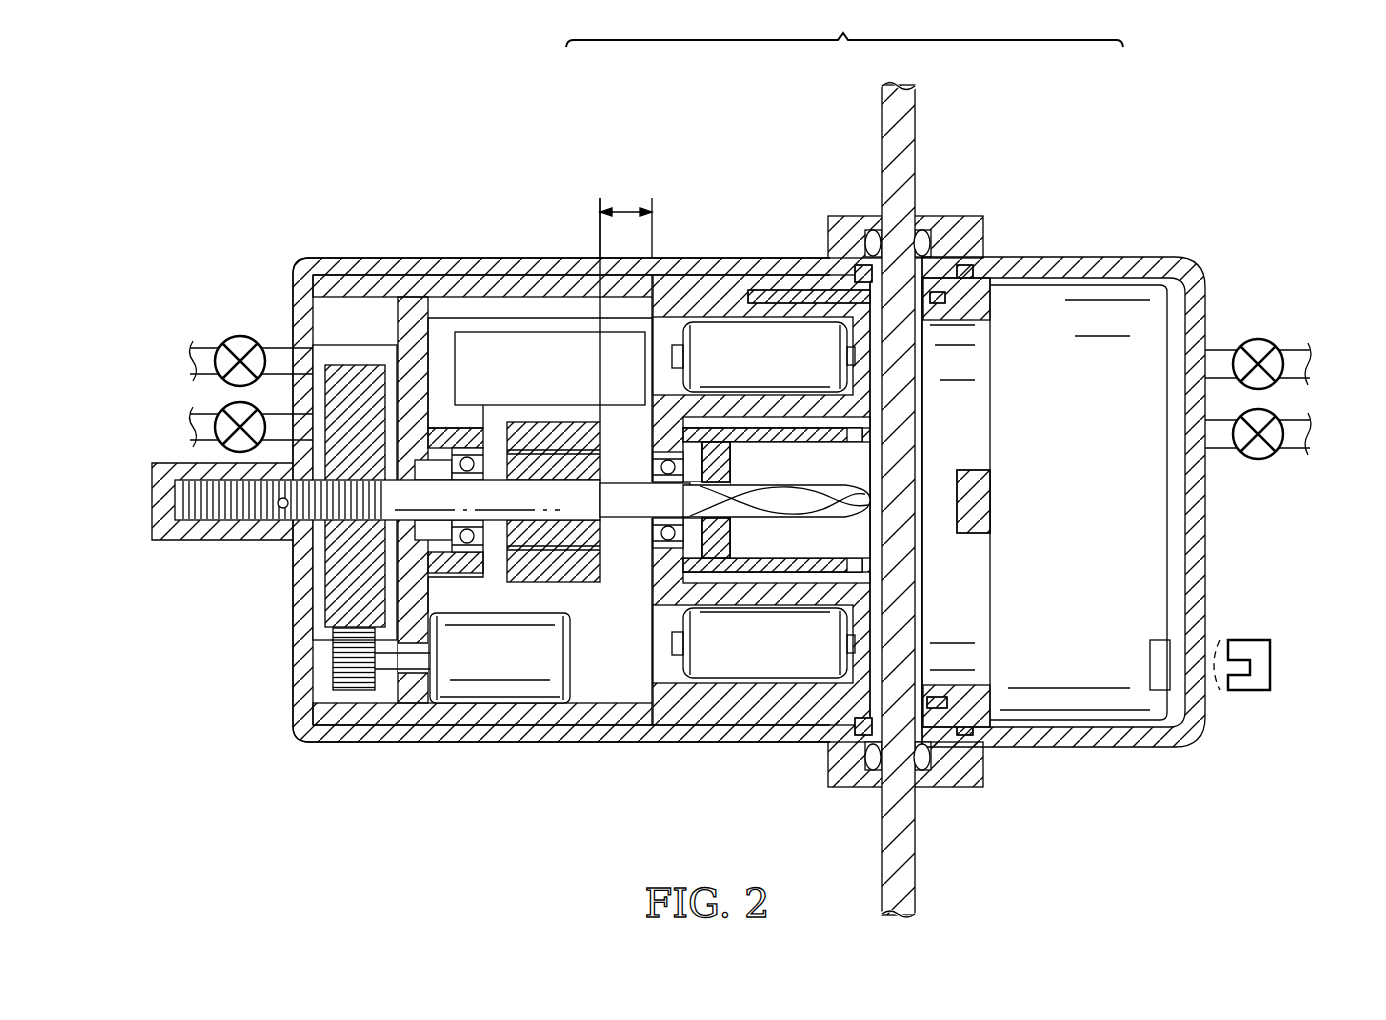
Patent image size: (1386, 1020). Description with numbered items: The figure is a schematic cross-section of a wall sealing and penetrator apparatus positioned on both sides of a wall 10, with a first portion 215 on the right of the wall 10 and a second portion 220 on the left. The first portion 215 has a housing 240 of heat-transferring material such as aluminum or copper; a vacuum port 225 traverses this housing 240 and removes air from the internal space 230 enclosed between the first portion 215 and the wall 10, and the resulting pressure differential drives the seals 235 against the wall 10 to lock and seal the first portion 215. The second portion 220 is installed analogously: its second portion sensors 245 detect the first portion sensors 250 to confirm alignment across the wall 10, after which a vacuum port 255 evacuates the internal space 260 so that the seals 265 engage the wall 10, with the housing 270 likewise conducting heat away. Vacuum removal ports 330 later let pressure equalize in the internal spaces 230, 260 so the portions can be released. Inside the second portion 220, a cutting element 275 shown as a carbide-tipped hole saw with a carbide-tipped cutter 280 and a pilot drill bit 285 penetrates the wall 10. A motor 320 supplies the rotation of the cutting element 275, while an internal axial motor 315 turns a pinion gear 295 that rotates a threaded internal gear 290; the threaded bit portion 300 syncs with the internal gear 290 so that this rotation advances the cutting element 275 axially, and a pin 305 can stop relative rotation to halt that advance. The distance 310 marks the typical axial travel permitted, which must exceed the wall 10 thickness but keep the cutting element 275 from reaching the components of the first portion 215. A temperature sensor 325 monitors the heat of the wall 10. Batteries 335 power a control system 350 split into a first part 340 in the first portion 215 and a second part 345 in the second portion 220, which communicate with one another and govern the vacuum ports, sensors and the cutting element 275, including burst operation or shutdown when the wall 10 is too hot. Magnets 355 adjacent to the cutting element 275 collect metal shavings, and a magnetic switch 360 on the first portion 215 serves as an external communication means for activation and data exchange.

The wall 10 is at (915, 890).
The first portion 215 is at (1212, 795).
The second portion 220 is at (307, 793).
The vacuum port 225 is at (1255, 340).
The internal space 230 is at (968, 587).
The seals 235 is at (925, 232).
The housing 240 is at (1073, 747).
The second portion sensors 245 is at (795, 290).
The first portion sensors 250 is at (948, 300).
The vacuum port 255 is at (240, 338).
The internal space 260 is at (760, 605).
The seals 265 is at (870, 232).
The housing 270 is at (392, 258).
The cutting element 275 is at (631, 583).
The carbide-tipped cutter 280 is at (1217, 195).
The pilot drill bit 285 is at (755, 518).
The internal gear 290 is at (320, 607).
The pinion gear 295 is at (333, 681).
The bit portion 300 is at (348, 525).
The pin 305 is at (283, 508).
The distance 310 is at (624, 210).
The internal axial motor 315 is at (572, 660).
The motor 320 is at (560, 422).
The temperature sensor 325 is at (990, 486).
The vacuum removal ports 330 is at (213, 432).
The batteries 335 is at (700, 725).
The first part 340 is at (1157, 550).
The second part 345 is at (515, 332).
The control system 350 is at (844, 25).
The magnets 355 is at (733, 470).
The magnetic switch 360 is at (1272, 668).